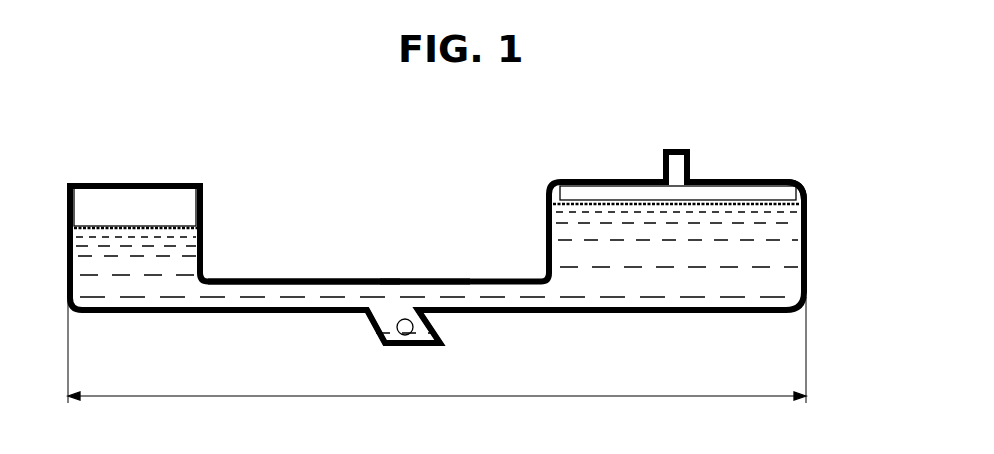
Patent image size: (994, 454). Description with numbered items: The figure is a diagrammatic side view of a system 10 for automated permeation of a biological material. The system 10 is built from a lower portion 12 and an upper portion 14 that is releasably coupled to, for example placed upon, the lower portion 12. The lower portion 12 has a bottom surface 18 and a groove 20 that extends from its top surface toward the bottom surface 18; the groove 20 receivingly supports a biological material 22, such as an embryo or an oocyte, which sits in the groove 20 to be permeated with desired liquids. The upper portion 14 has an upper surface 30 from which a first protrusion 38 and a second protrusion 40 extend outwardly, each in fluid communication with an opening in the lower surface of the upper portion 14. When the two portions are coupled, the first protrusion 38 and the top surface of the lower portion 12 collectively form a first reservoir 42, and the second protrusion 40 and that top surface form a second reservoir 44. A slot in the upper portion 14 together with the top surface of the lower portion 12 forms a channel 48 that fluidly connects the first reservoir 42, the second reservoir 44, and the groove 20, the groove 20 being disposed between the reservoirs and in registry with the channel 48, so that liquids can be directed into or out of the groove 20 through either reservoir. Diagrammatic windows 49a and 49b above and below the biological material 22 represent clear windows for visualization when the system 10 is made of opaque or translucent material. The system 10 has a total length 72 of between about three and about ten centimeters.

The system 10 is at (540, 144).
The lower portion 12 is at (673, 313).
The upper portion 14 is at (808, 212).
The bottom surface 18 is at (585, 313).
The groove 20 is at (432, 333).
The biological material 22 is at (384, 331).
The upper surface 30 is at (244, 280).
The first protrusion 38 is at (204, 204).
The second protrusion 40 is at (805, 192).
The first reservoir 42 is at (174, 189).
The second reservoir 44 is at (714, 190).
The channel 48 is at (328, 295).
The diagrammatic window 49a is at (400, 280).
The diagrammatic window 49b is at (413, 347).
The total length 72 is at (513, 397).